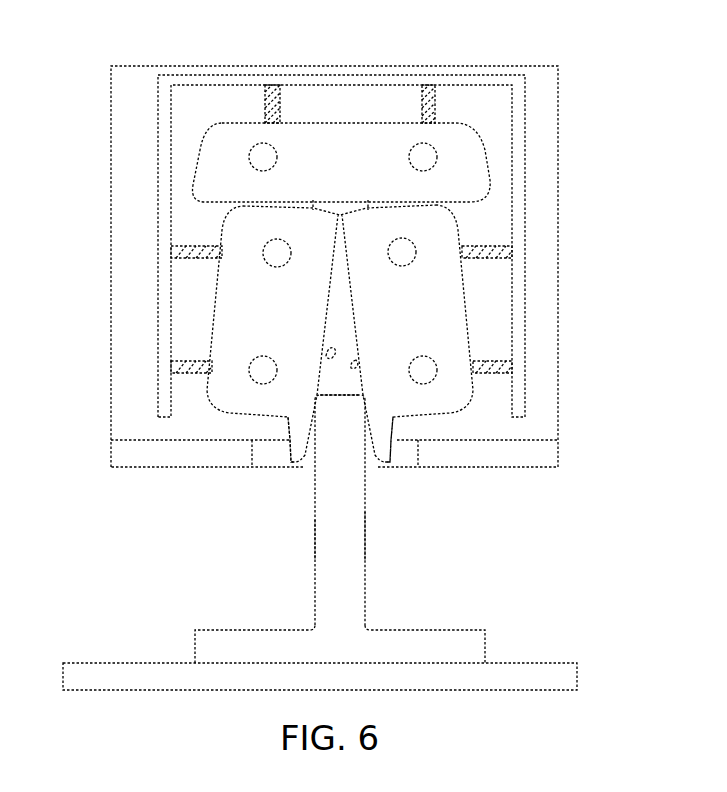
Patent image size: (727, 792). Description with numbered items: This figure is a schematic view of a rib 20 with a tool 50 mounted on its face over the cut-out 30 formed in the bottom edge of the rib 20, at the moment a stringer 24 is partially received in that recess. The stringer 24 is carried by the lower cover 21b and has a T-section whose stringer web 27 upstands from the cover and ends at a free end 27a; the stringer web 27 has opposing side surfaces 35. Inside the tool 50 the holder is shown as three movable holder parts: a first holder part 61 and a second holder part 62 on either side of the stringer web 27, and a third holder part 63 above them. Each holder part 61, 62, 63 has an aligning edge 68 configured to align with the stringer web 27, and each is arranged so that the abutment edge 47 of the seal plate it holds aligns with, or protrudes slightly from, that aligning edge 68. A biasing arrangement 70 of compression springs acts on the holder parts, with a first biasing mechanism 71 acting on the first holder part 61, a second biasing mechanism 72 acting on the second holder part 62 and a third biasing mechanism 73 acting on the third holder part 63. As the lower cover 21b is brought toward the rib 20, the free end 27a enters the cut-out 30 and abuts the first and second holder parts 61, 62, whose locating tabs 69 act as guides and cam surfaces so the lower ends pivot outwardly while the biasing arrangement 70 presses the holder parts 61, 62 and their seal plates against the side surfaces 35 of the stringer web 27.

The rib 20 is at (545, 193).
The tool 50 is at (530, 141).
The third holder part 63 is at (352, 172).
The third biasing mechanism 73 is at (268, 87).
The second biasing mechanism 72 is at (171, 252).
The biasing arrangement 70 is at (512, 252).
The first biasing mechanism 71 is at (512, 366).
The first holder part 61 is at (287, 304).
The second holder part 62 is at (427, 304).
The abutment edge 47 is at (327, 356).
The aligning edge 68 is at (358, 362).
The cut-out 30 is at (310, 463).
The locating tab 69 is at (390, 447).
The stringer web 27 is at (366, 567).
The free end 27a is at (340, 396).
The side surfaces 35 is at (315, 522).
The stringer 24 is at (432, 642).
The lower cover 21b is at (485, 679).